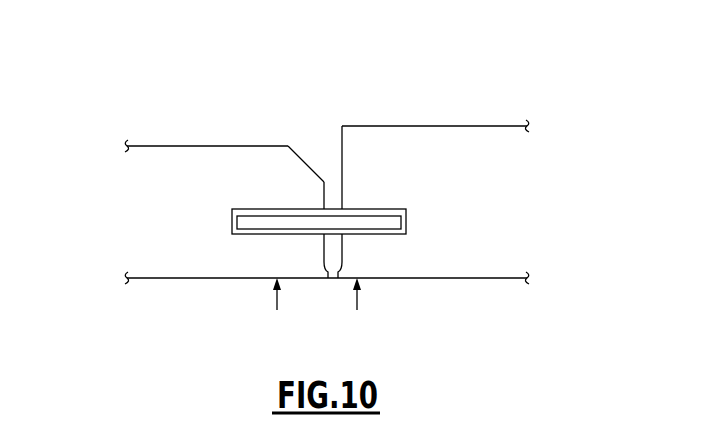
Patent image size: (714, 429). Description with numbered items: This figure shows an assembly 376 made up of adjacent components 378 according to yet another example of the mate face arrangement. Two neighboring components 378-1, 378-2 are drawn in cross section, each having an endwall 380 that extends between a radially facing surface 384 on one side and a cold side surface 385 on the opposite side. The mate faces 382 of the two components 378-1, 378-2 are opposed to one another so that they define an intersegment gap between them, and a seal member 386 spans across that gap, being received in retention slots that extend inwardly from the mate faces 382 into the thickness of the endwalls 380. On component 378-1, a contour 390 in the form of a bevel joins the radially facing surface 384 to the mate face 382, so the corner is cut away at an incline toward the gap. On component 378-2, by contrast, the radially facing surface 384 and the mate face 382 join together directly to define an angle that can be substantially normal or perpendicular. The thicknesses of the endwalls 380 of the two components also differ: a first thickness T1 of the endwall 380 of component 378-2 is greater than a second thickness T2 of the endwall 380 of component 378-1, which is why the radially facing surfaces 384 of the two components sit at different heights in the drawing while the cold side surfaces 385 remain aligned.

The assembly 376 is at (127, 71).
The components 378 is at (310, 105).
The component 378-1 is at (163, 170).
The component 378-2 is at (490, 138).
The endwall 380 is at (213, 163).
The mate face 382 is at (336, 268).
The radially facing surface 384 is at (190, 146).
The cold side surface 385 is at (154, 278).
The seal member 386 is at (265, 222).
The contour 390 is at (295, 148).
The first thickness T1 is at (357, 114).
The second thickness T2 is at (277, 134).